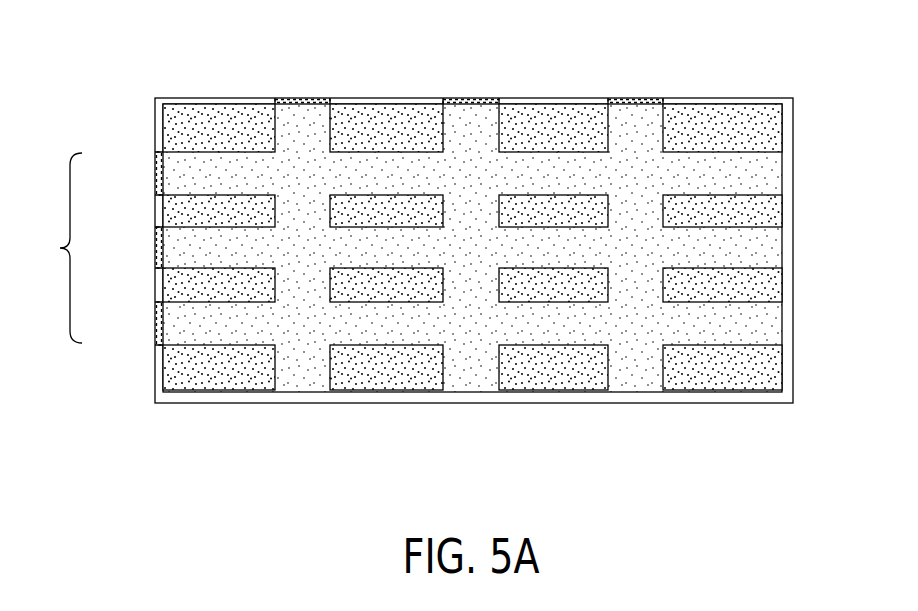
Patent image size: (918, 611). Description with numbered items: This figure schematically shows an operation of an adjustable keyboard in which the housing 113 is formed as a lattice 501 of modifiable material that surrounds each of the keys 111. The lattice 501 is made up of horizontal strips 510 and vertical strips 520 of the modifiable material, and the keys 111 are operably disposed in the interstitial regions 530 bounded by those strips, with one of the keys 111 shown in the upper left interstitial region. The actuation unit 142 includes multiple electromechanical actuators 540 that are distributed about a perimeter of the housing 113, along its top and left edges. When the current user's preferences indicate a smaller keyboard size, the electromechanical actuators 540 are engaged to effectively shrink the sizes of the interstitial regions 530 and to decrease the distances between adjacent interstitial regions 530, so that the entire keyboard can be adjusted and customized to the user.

The housing 113 is at (157, 108).
The keys 111 is at (233, 142).
The actuation unit 142 is at (53, 248).
The electromechanical actuators 540 is at (635, 97).
The interstitial regions 530 is at (185, 213).
The horizontal strips 510 is at (362, 168).
The vertical strips 520 is at (630, 352).
The lattice 501 is at (437, 257).